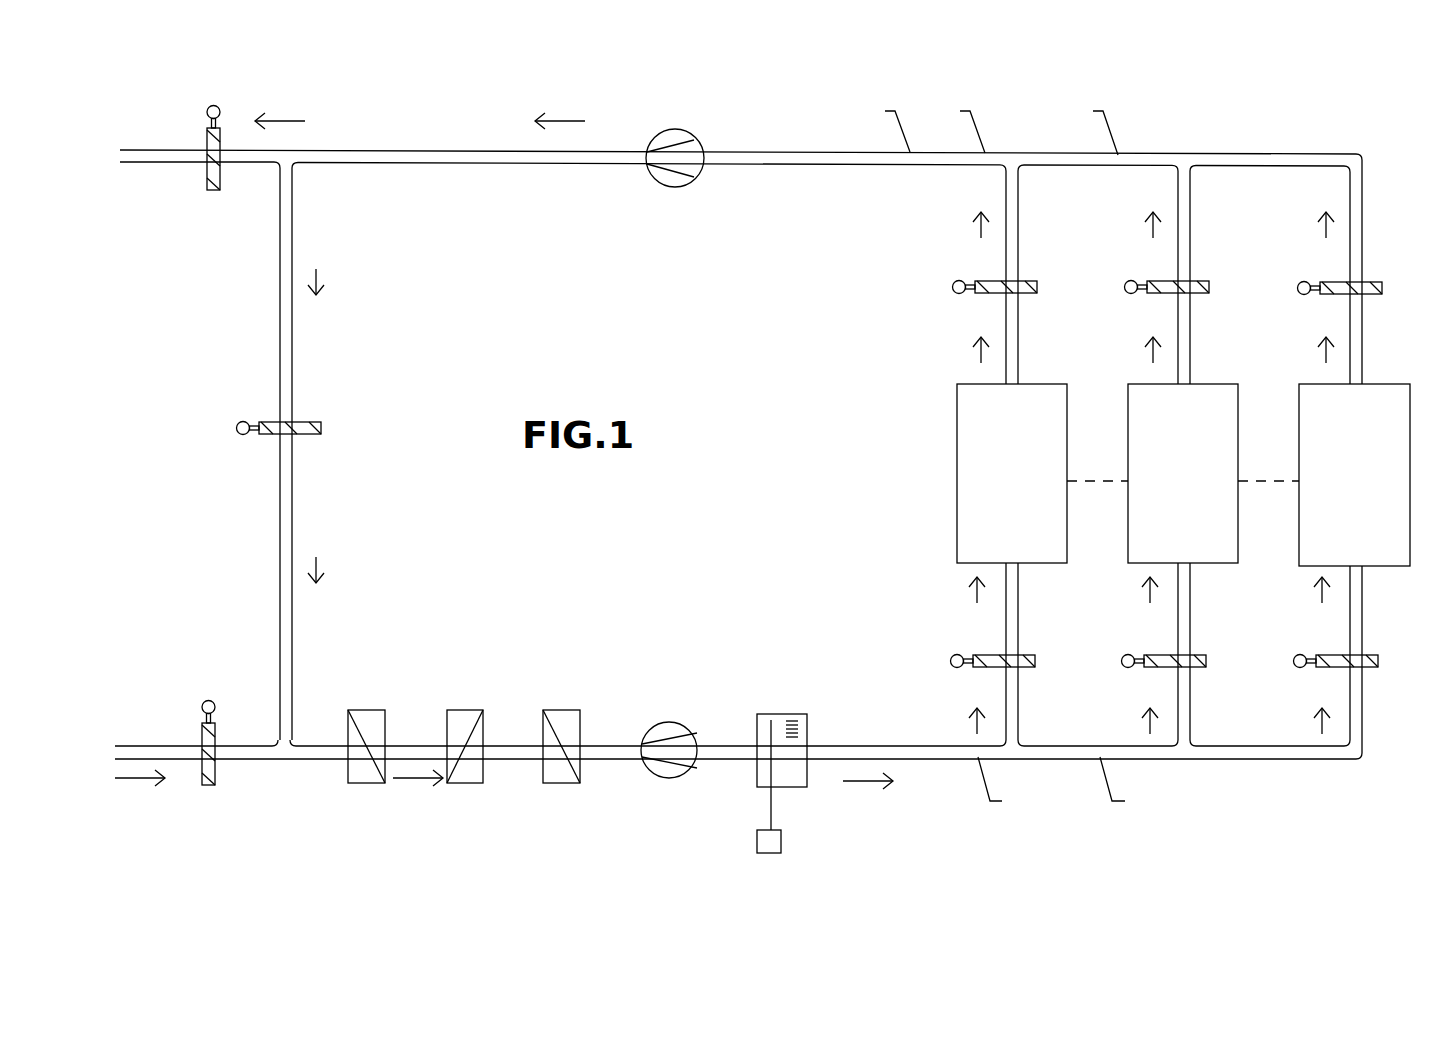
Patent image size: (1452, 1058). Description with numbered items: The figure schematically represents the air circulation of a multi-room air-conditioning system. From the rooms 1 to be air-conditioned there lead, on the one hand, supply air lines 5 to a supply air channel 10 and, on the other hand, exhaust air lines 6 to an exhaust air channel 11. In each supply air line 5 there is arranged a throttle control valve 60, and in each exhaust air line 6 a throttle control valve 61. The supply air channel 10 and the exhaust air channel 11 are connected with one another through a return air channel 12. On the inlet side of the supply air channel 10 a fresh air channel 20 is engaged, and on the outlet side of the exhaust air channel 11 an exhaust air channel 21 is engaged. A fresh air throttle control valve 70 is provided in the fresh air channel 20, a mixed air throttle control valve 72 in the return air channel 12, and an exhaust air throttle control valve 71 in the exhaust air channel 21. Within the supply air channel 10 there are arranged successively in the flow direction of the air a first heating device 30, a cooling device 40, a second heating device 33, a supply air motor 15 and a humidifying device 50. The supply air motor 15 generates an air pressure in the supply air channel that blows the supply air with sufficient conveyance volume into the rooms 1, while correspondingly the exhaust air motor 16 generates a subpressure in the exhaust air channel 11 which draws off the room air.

The rooms 1 is at (1161, 475).
The supply air line 5 is at (1188, 651).
The exhaust air line 6 is at (1149, 277).
The supply air channel 10 is at (738, 694).
The exhaust air channel 11 is at (741, 238).
The return air channel 12 is at (352, 454).
The supply air motor 15 is at (682, 721).
The exhaust air motor 16 is at (656, 177).
The fresh air channel 20 is at (146, 750).
The exhaust air channel 21 is at (237, 120).
The first heating device 30 is at (395, 726).
The second heating device 33 is at (581, 723).
The cooling device 40 is at (484, 723).
The humidifying device 50 is at (799, 758).
The throttle control valve 60 is at (1149, 643).
The throttle control valve 61 is at (1147, 272).
The fresh air throttle control valve 70 is at (238, 729).
The exhaust air throttle control valve 71 is at (174, 172).
The mixed air throttle control valve 72 is at (308, 413).